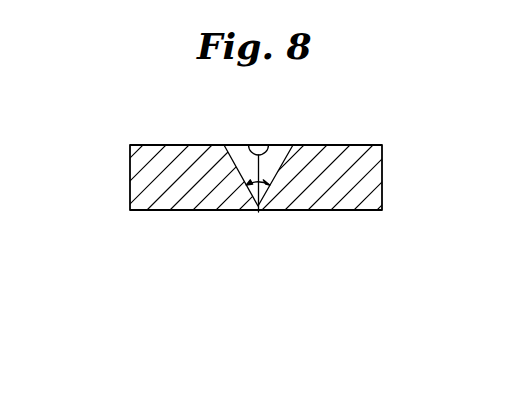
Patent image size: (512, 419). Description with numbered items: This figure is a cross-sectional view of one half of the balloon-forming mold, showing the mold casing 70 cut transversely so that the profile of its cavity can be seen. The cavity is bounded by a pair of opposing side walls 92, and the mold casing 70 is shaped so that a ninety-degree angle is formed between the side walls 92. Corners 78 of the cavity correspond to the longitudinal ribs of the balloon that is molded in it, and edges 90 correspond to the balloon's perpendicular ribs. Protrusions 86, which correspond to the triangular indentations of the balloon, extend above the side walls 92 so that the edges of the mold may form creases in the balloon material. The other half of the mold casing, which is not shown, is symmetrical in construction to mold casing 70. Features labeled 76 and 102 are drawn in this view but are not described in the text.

The mold casing 70 is at (394, 134).
The corners 78 is at (208, 145).
The protrusions 86 is at (235, 160).
The side walls 92 is at (223, 146).
The bore/channel 76 is at (261, 146).
The groove centerline 102 is at (243, 163).
The edges 90 is at (250, 193).